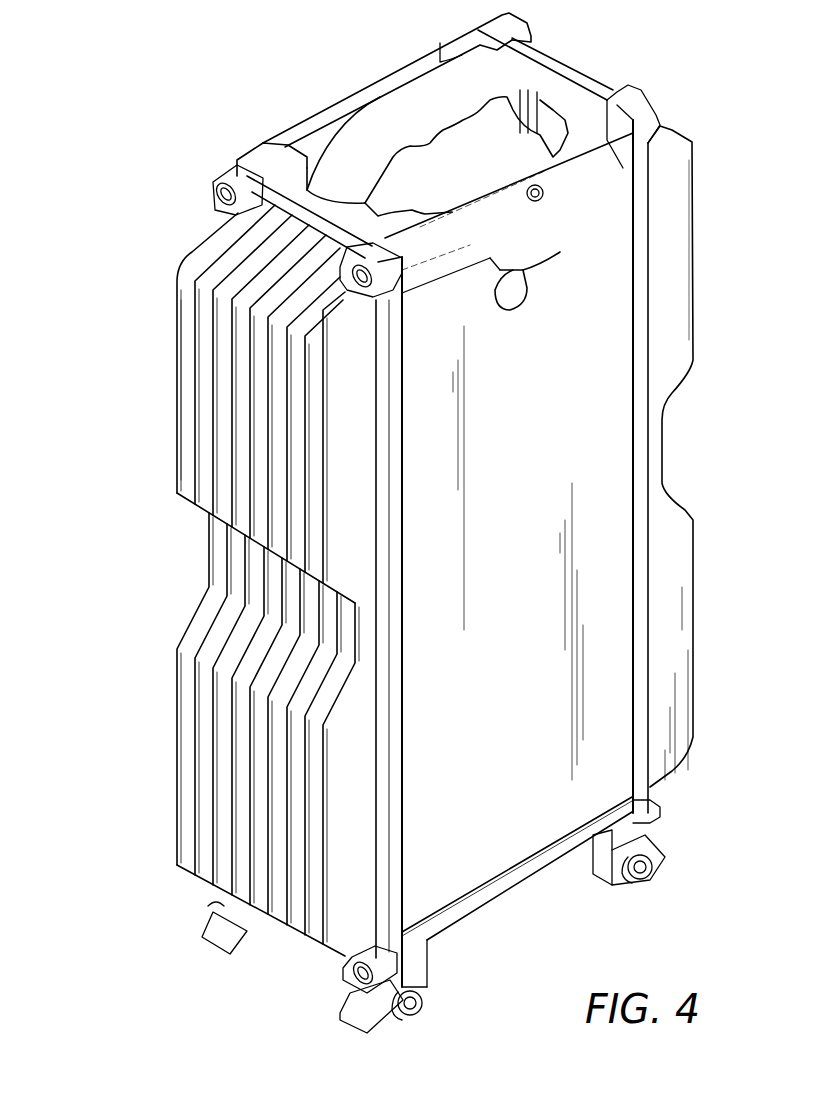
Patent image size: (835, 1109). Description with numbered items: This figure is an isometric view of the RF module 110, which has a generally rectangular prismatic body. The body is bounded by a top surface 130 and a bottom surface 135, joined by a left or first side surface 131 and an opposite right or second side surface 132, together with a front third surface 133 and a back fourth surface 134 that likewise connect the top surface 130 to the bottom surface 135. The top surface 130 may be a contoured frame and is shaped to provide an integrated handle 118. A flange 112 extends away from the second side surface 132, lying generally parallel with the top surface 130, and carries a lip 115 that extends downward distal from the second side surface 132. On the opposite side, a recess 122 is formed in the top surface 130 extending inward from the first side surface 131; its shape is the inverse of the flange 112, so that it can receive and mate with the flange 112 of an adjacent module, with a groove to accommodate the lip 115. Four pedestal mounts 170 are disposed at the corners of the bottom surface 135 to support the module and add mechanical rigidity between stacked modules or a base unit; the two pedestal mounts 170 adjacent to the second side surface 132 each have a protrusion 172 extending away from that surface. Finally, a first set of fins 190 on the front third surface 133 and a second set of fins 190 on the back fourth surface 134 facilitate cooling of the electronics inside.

The RF module 110 is at (187, 954).
The flange 112 is at (577, 202).
The lip 115 is at (560, 252).
The integrated handle 118 is at (416, 115).
The recess 122 is at (407, 52).
The top surface 130 is at (580, 101).
The first side surface 131 is at (183, 214).
The second side surface 132 is at (588, 428).
The front third surface 133 is at (196, 569).
The back fourth surface 134 is at (688, 111).
The bottom surface 135 is at (496, 900).
The pedestal mount 170 is at (620, 846).
The protrusion 172 is at (650, 877).
The fins 190 is at (177, 380).